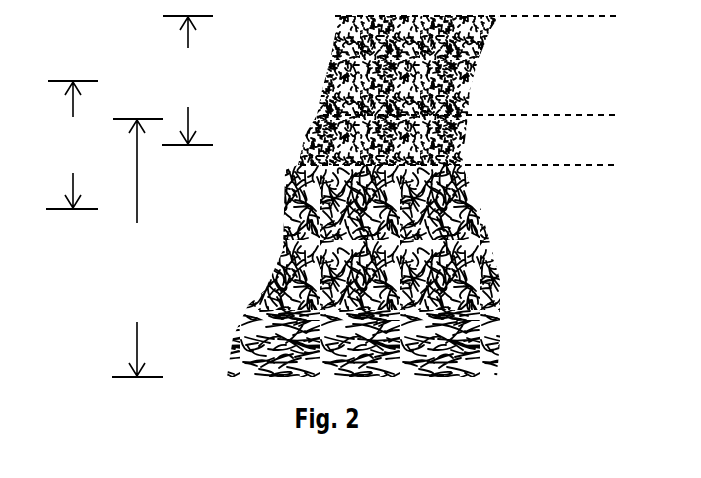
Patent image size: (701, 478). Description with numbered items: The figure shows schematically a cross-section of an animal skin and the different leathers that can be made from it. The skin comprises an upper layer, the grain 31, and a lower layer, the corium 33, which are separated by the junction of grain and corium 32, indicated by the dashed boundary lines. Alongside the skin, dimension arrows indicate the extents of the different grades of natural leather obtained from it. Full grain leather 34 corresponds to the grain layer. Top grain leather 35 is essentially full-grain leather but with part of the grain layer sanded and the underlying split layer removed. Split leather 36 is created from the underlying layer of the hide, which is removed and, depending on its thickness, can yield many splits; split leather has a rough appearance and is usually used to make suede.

The grain 31 is at (467, 65).
The junction of grain and corium 32 is at (457, 140).
The corium 33 is at (398, 272).
The full grain leather 34 is at (187, 80).
The top grain leather 35 is at (72, 145).
The split leather 36 is at (137, 248).